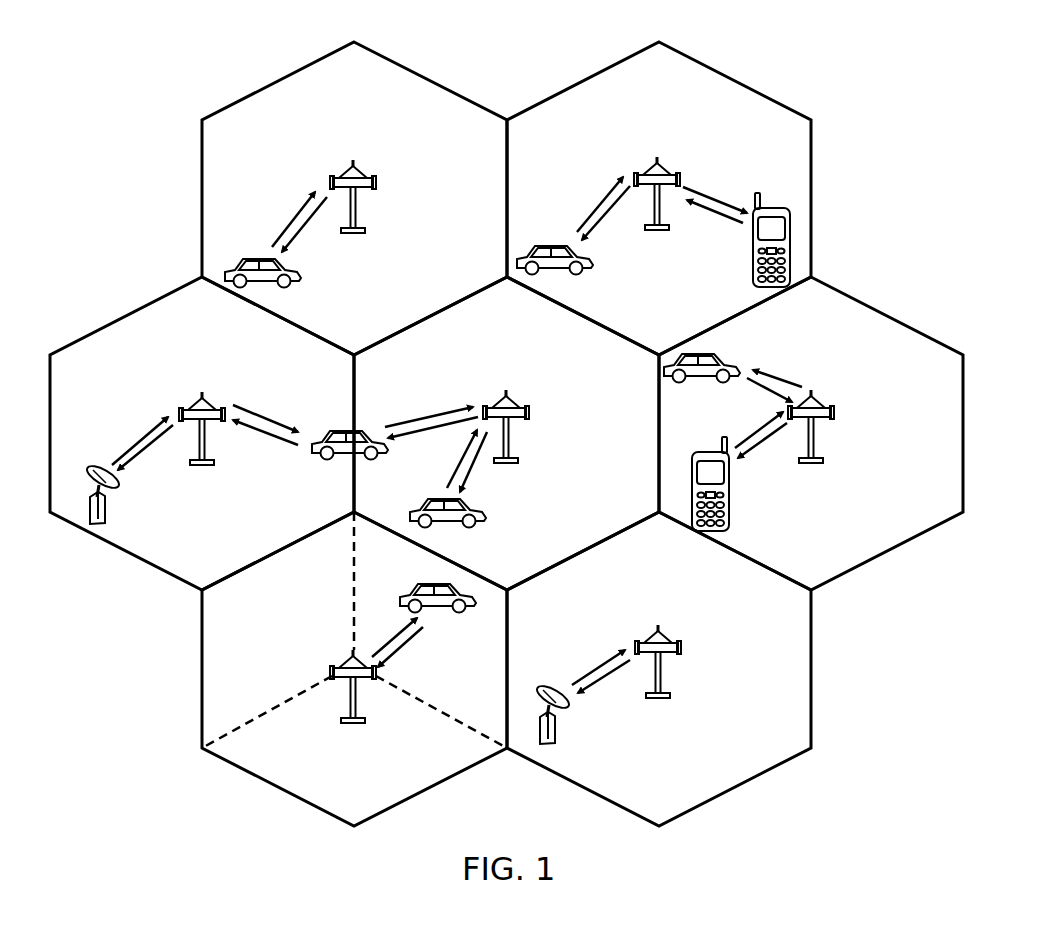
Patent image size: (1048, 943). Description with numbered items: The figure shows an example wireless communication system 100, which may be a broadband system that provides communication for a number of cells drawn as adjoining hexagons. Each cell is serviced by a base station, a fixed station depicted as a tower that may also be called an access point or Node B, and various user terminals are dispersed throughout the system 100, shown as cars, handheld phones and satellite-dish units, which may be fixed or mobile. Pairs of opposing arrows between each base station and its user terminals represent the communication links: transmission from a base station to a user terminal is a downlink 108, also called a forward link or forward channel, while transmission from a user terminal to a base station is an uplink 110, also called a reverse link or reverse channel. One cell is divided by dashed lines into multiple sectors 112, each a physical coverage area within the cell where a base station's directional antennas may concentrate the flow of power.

The wireless communication system 100 is at (987, 93).
The downlink 108 is at (302, 236).
The uplink 110 is at (292, 222).
The sector 112 is at (408, 783).